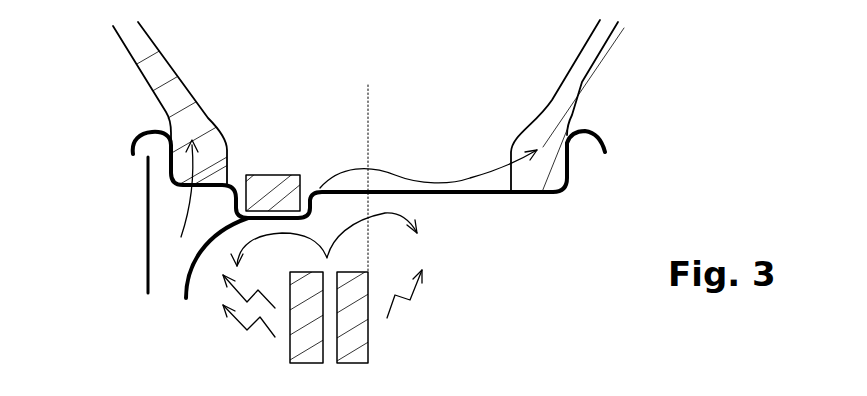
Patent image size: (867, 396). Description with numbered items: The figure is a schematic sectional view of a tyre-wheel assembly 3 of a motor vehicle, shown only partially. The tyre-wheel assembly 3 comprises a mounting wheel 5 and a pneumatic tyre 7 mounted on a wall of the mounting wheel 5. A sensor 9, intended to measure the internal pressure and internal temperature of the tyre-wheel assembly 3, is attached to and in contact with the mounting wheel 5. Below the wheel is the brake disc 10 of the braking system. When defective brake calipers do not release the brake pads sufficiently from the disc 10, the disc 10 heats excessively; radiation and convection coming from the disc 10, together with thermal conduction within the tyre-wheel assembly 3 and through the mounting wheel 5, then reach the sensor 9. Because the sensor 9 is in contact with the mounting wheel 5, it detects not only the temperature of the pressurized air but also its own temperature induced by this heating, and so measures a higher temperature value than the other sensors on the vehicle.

The tyre-wheel assembly 3 is at (72, 112).
The mounting wheel 5 is at (166, 262).
The pneumatic tyre 7 is at (155, 60).
The sensor 9 is at (265, 183).
The disc 10 is at (358, 345).